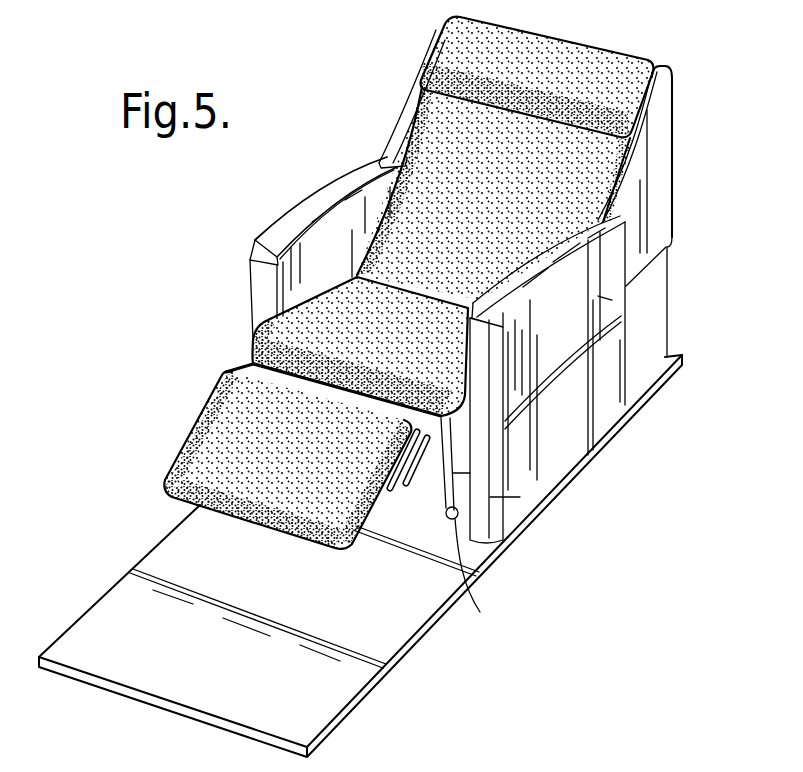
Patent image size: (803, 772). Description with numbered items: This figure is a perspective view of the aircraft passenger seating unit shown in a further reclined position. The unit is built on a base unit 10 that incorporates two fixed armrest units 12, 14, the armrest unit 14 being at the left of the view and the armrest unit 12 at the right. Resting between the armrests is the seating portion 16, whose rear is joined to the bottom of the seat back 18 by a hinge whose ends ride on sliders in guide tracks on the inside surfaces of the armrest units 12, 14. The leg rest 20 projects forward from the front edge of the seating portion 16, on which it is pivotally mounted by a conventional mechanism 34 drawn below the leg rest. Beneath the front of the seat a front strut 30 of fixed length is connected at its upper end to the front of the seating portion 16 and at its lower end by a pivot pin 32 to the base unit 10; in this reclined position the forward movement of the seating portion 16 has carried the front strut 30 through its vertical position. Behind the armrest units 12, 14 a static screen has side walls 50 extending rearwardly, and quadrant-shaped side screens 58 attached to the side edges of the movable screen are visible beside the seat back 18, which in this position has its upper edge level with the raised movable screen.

The base unit 10 is at (347, 687).
The armrest unit 12 is at (573, 431).
The armrest unit 14 is at (317, 203).
The seating portion 16 is at (327, 318).
The seat back 18 is at (567, 57).
The leg rest 20 is at (218, 428).
The front strut 30 is at (452, 477).
The pivot pin 32 is at (484, 576).
The mechanism 34 is at (380, 500).
The side wall 50 is at (652, 313).
The side screen 58 is at (400, 125).